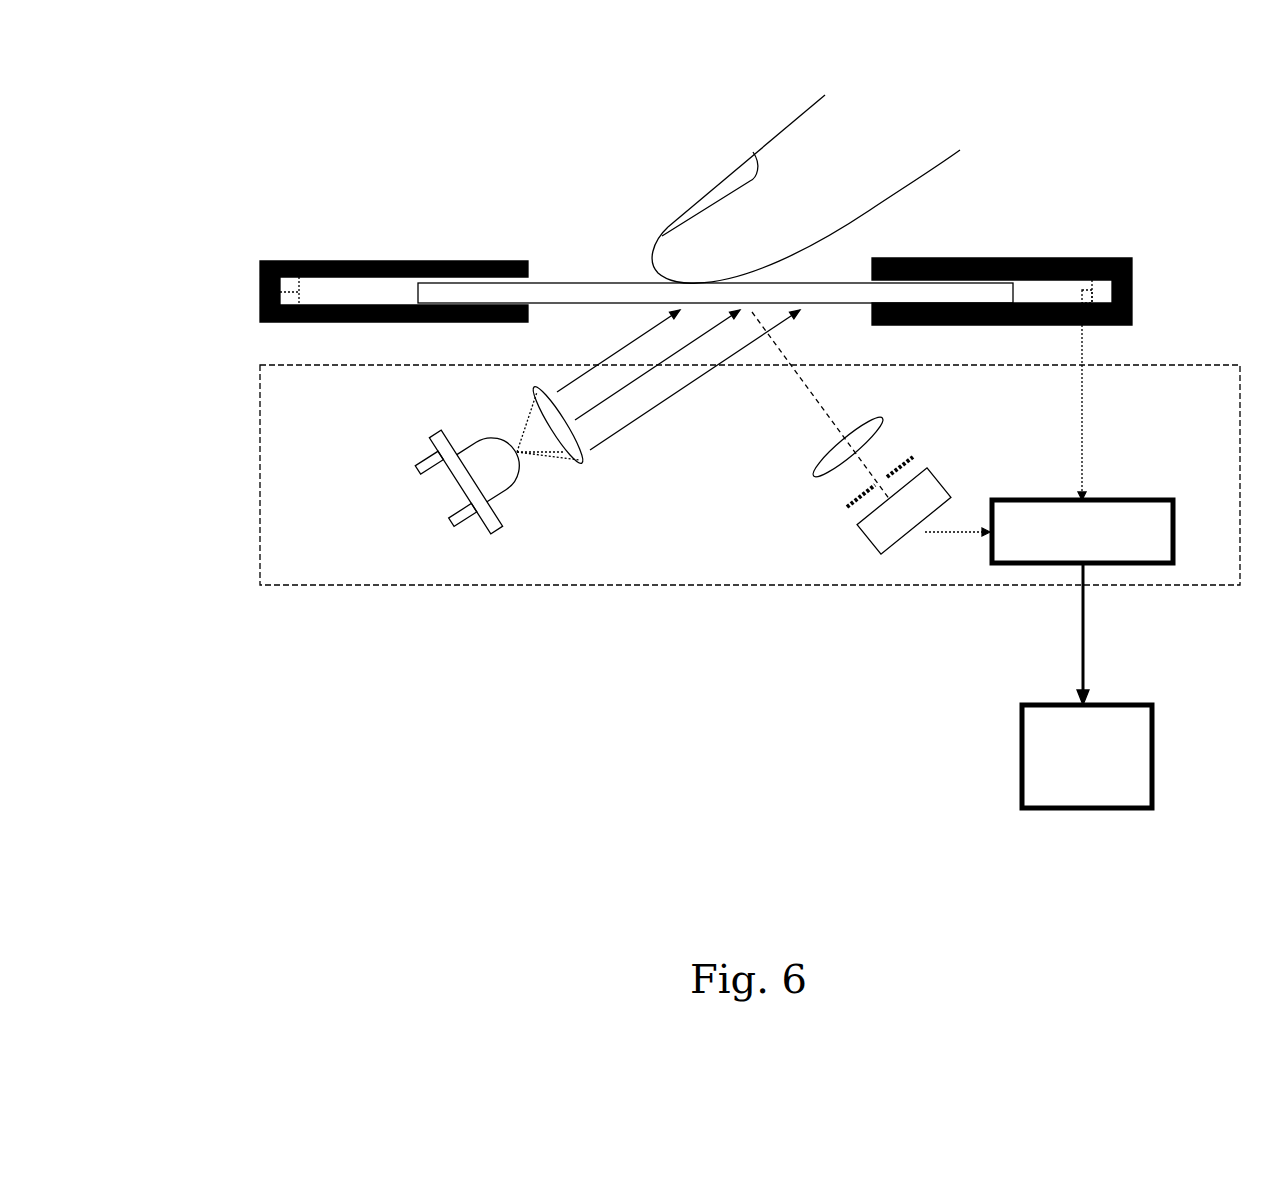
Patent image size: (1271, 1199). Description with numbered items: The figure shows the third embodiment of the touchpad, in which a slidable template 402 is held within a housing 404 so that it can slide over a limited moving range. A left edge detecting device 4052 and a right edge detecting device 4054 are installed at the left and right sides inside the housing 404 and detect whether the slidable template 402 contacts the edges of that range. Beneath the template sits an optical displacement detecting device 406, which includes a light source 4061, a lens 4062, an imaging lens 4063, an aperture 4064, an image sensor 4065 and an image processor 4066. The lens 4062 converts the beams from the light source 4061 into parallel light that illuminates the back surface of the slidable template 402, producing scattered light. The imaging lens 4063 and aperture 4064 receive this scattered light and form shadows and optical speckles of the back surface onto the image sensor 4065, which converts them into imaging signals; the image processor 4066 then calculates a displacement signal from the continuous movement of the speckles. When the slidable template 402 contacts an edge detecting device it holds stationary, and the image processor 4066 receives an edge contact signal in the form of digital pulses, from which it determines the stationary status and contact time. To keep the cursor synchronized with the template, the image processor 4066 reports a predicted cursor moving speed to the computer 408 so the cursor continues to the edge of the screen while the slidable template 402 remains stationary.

The slidable template 402 is at (577, 280).
The housing 404 is at (468, 262).
The optical displacement detecting device 406 is at (522, 582).
The computer 408 is at (1087, 756).
The left edge detecting device 4052 is at (288, 292).
The right edge detecting device 4054 is at (1133, 292).
The light source 4061 is at (495, 467).
The lens 4062 is at (582, 462).
The imaging lens 4063 is at (822, 462).
The aperture 4064 is at (900, 462).
The image sensor 4065 is at (873, 530).
The image processor 4066 is at (1028, 542).